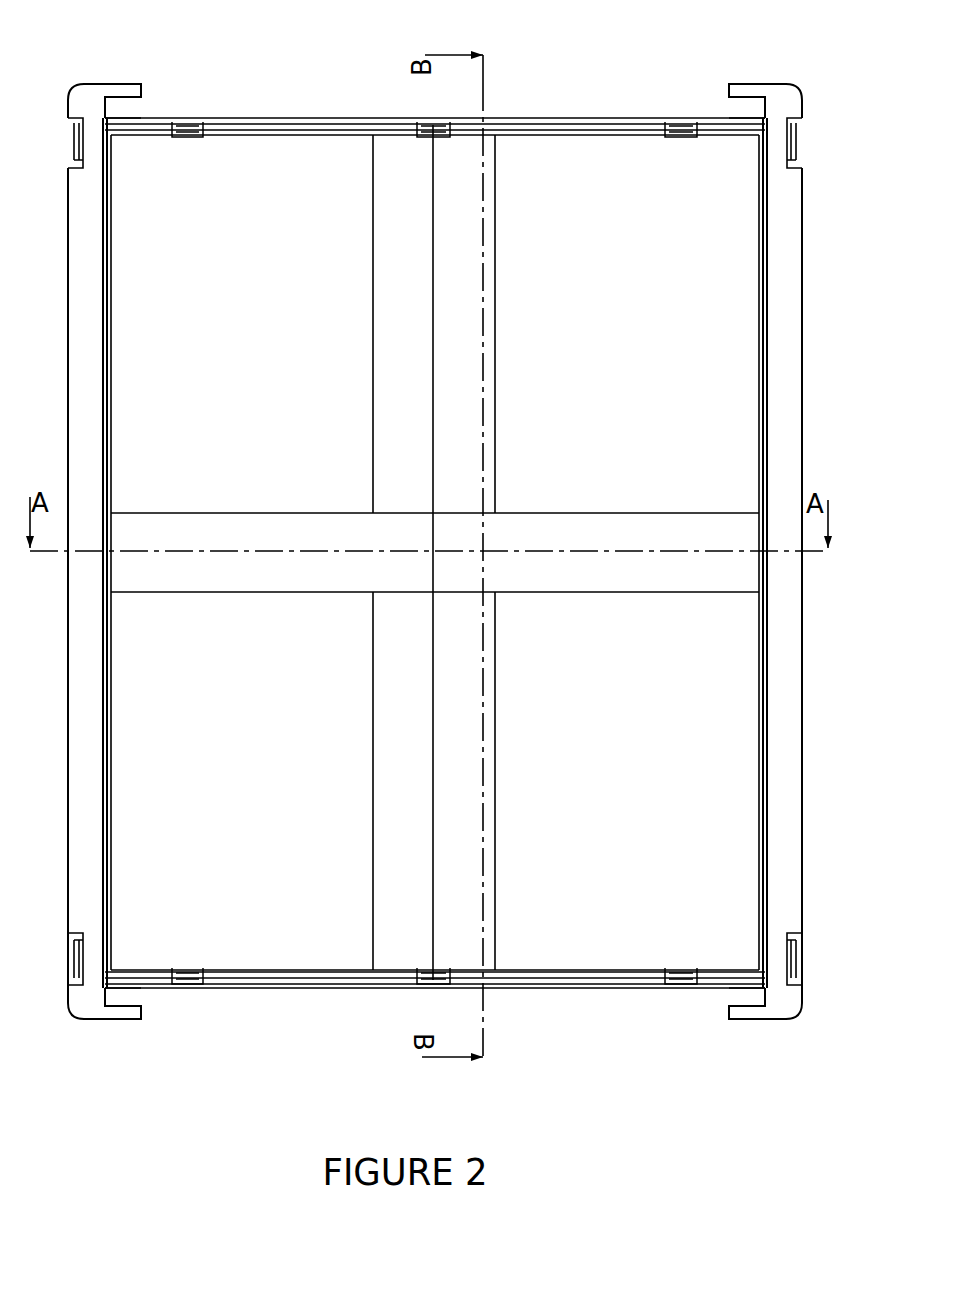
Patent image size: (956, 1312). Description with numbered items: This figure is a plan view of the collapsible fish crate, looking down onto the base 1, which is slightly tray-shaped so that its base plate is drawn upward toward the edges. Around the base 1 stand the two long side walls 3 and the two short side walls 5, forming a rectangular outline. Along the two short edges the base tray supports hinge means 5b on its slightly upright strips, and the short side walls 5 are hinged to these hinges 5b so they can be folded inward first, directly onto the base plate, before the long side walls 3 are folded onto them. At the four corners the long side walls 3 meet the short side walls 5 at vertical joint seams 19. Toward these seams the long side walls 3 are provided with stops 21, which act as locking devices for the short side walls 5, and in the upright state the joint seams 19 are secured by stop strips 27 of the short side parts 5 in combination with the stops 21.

The base 1 is at (135, 318).
The long side wall 3 is at (778, 283).
The short side wall 5 is at (272, 95).
The hinge 5b is at (188, 122).
The vertical joint seam 19 is at (103, 117).
The stop 21 is at (118, 90).
The stop strip 27 is at (125, 110).